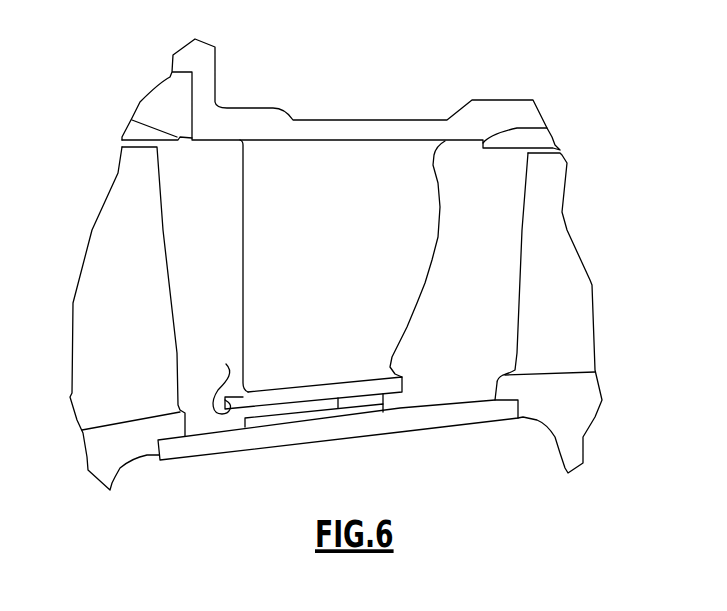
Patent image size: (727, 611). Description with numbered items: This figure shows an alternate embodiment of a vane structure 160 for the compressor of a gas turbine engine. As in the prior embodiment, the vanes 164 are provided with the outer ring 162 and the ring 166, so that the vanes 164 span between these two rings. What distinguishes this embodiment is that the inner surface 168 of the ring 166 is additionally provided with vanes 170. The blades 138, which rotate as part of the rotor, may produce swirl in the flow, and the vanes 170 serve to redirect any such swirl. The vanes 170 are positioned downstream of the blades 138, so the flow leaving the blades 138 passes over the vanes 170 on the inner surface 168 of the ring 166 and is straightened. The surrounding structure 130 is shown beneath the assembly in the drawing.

The base plate 130 is at (357, 434).
The blades 138 is at (262, 423).
The vane assembly 160 is at (477, 479).
The outer ring 162 is at (352, 133).
The vanes 164 is at (393, 235).
The ring 166 is at (404, 384).
The inner surface 168 is at (215, 385).
The vanes 170 is at (373, 409).